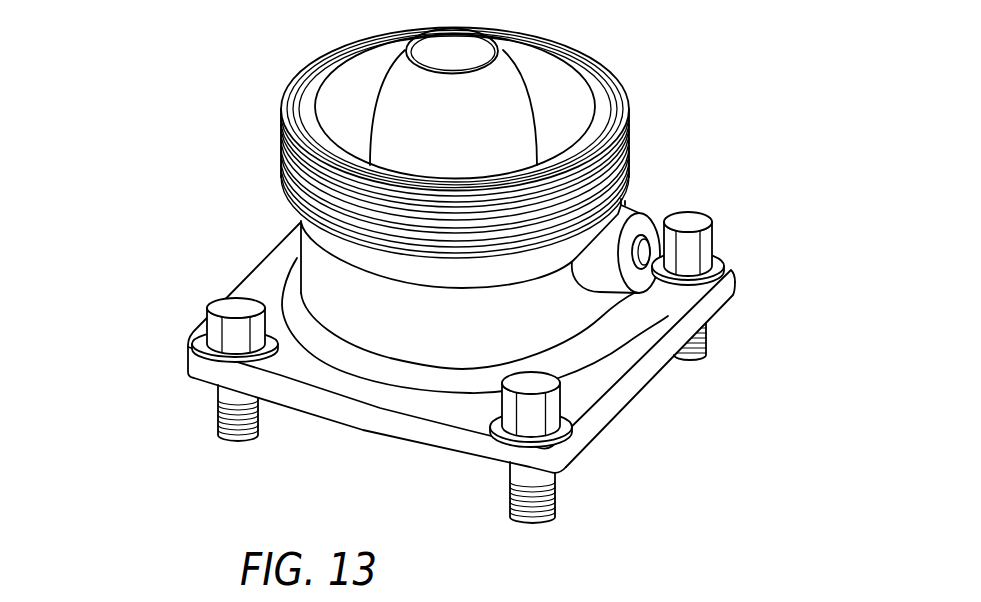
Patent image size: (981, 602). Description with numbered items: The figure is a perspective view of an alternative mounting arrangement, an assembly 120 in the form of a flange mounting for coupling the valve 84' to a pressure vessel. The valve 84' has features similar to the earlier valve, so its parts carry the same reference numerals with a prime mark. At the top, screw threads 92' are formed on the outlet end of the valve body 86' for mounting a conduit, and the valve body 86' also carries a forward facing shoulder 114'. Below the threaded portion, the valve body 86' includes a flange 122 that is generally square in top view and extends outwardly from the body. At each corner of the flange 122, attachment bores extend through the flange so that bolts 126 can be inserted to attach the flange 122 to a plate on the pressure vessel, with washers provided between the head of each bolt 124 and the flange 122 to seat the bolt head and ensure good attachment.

The alternative assembly 120 is at (454, 282).
The valve 84' is at (396, 109).
The screw threads 92' is at (510, 183).
The valve body 86' is at (399, 296).
The forward facing shoulder 114' is at (510, 367).
The flange 122 is at (700, 305).
The bolt 124 is at (218, 441).
The bolts 126 is at (206, 322).